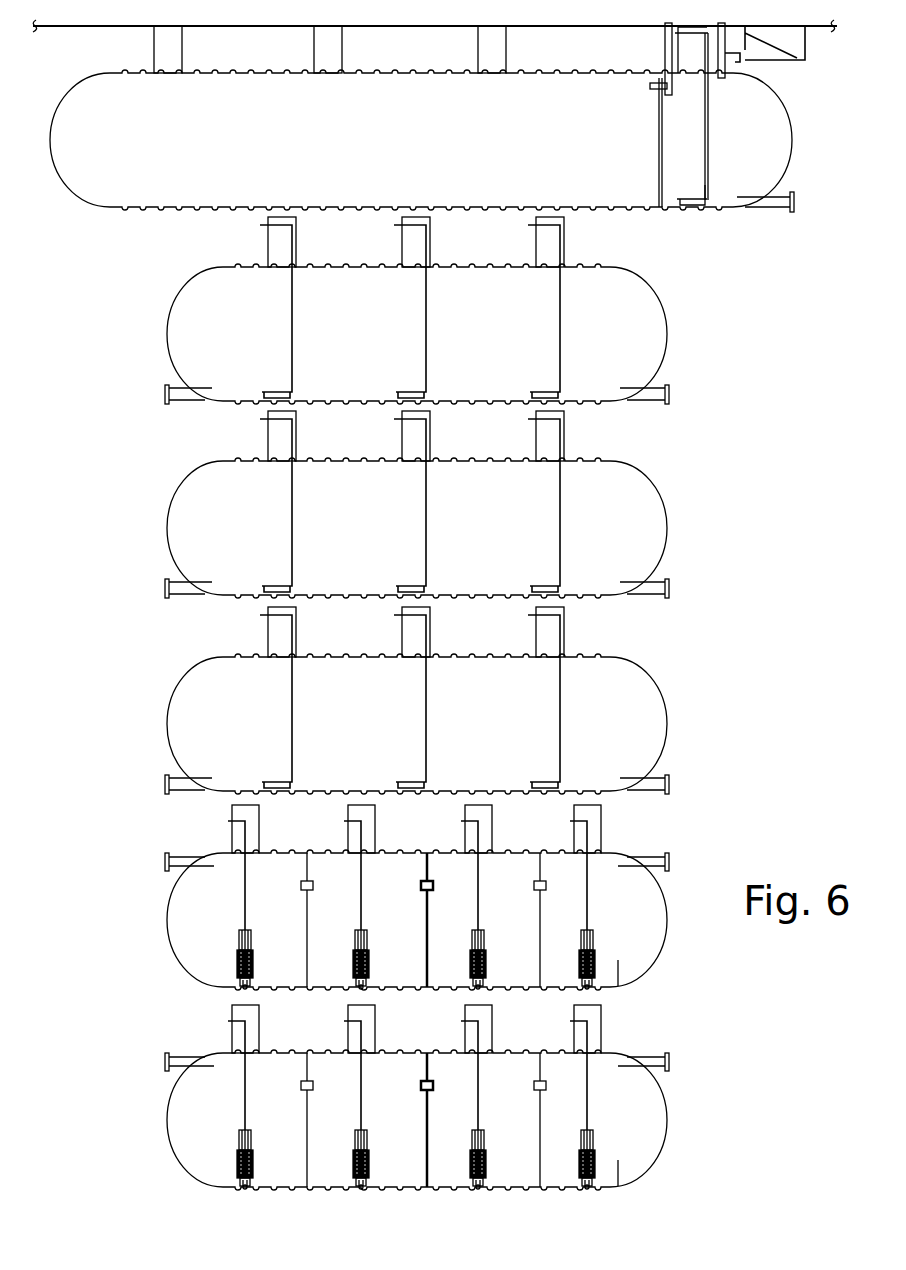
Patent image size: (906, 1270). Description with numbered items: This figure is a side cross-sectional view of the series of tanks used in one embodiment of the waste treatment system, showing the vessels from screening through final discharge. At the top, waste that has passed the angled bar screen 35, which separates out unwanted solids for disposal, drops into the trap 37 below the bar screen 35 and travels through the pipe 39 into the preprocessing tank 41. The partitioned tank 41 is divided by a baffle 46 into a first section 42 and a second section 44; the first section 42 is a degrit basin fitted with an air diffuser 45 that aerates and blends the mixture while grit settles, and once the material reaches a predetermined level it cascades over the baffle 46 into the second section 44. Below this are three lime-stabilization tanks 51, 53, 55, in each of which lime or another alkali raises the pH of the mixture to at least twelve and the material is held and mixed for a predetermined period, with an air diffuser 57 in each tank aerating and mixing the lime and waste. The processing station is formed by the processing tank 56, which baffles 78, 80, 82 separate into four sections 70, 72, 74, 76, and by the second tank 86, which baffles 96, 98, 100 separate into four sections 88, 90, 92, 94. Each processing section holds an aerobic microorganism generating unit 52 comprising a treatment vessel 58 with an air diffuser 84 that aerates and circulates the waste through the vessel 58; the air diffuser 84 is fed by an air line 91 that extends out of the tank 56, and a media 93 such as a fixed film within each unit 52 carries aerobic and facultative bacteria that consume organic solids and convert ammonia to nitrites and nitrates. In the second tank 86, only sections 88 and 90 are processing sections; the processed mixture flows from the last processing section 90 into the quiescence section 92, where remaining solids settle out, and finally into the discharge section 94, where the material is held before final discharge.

The angled bar screen 35 is at (777, 50).
The trap 37 is at (767, 60).
The pipe 39 is at (736, 50).
The partitioned tank 41 is at (805, 127).
The first section 42 is at (775, 163).
The second section 44 is at (593, 182).
The air diffuser 45 is at (688, 205).
The baffle 46 is at (658, 157).
The tank 51 is at (655, 342).
The tank 53 is at (655, 536).
The tank 55 is at (655, 732).
The air diffuser 57 is at (555, 393).
The air line 91 is at (585, 900).
The treatment vessel 58 is at (592, 957).
The processing tank 56 is at (665, 935).
The aerobic microorganism generating unit 52 is at (592, 960).
The section 70 is at (618, 975).
The air diffuser 84 is at (588, 985).
The section 76 is at (283, 978).
The section 74 is at (403, 972).
The section 72 is at (515, 978).
The baffle 82 is at (307, 965).
The baffle 80 is at (428, 970).
The baffle 78 is at (542, 972).
The second tank 86 is at (665, 1143).
The media 93 is at (592, 1162).
The section 88 is at (615, 1175).
The section 94 is at (283, 1178).
The section 92 is at (390, 1172).
The section 90 is at (503, 1170).
The baffle 100 is at (307, 1165).
The baffle 98 is at (428, 1170).
The baffle 96 is at (540, 1163).